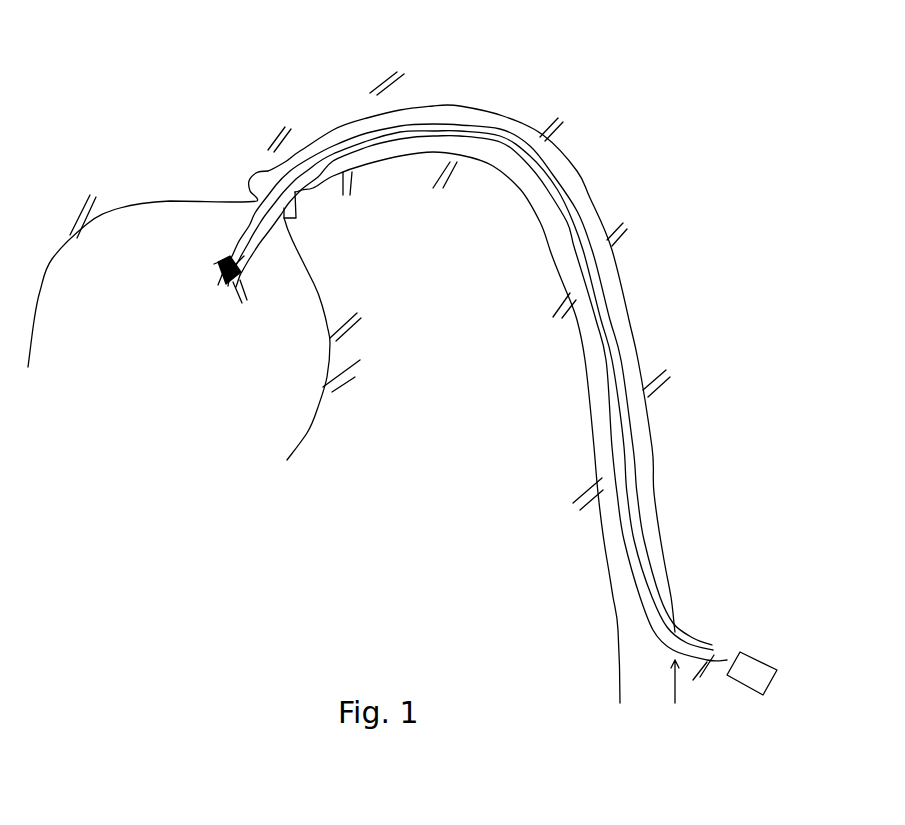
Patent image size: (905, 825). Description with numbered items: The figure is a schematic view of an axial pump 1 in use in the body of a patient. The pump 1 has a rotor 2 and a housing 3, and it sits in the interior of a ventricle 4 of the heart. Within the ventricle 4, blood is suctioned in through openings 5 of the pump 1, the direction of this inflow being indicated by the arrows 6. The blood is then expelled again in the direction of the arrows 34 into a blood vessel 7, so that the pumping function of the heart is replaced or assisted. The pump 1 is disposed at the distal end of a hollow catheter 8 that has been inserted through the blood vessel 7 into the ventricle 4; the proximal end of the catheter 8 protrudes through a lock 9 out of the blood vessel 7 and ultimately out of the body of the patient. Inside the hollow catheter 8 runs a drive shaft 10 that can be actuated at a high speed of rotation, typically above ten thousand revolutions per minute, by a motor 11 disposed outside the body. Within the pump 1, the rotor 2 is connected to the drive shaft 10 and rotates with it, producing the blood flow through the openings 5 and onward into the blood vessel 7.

The axial pump 1 is at (228, 235).
The rotor 2 is at (263, 232).
The housing 3 is at (229, 257).
The ventricle 4 is at (280, 418).
The openings 5 is at (235, 271).
The arrows 6 is at (213, 270).
The blood vessel 7 is at (339, 131).
The hollow catheter 8 is at (437, 126).
The lock 9 is at (675, 630).
The drive shaft 10 is at (500, 143).
The motor 11 is at (758, 660).
The arrows 34 is at (296, 218).